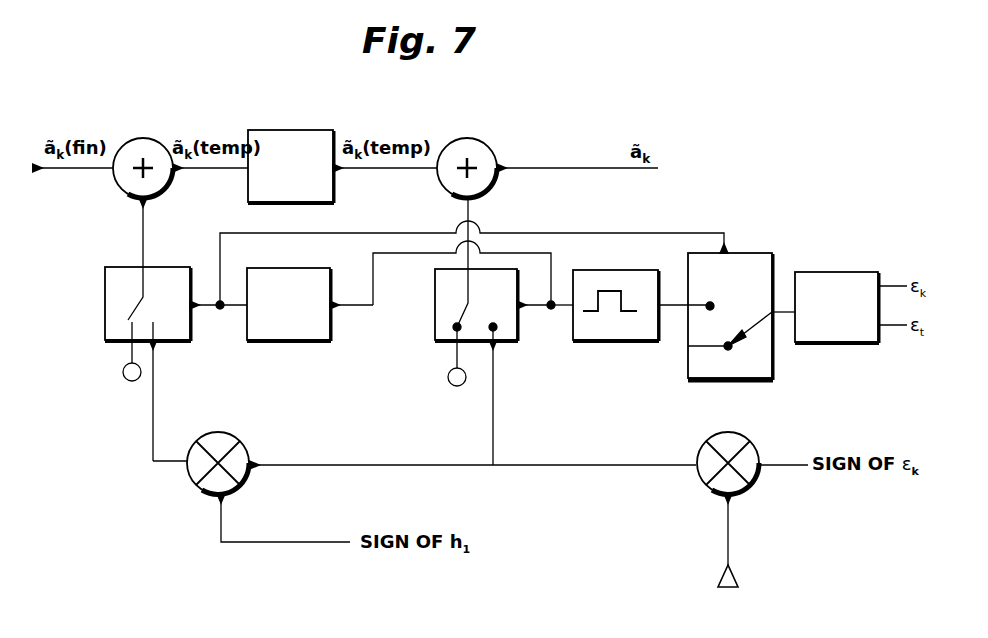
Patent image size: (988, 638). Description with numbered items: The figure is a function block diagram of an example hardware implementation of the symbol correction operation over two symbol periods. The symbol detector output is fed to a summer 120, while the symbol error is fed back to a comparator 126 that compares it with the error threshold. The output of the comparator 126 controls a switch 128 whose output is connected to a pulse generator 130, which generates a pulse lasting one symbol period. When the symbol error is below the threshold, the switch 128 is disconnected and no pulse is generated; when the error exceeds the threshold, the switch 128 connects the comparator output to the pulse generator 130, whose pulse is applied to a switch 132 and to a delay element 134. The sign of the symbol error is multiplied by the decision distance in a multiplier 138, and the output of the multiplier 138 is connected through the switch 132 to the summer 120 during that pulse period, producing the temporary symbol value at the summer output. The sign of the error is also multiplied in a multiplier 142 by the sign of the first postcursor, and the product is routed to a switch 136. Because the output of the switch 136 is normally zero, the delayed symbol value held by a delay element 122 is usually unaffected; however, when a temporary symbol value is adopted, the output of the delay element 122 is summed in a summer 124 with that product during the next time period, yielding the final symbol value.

The summer 120 is at (485, 148).
The delay element 122 is at (293, 140).
The summer 124 is at (140, 146).
The comparator 126 is at (817, 275).
The switch 128 is at (737, 260).
The pulse generator 130 is at (583, 277).
The switch 132 is at (512, 347).
The delay element 134 is at (277, 275).
The switch 136 is at (168, 282).
The multiplier 138 is at (733, 432).
The multiplier 142 is at (250, 448).